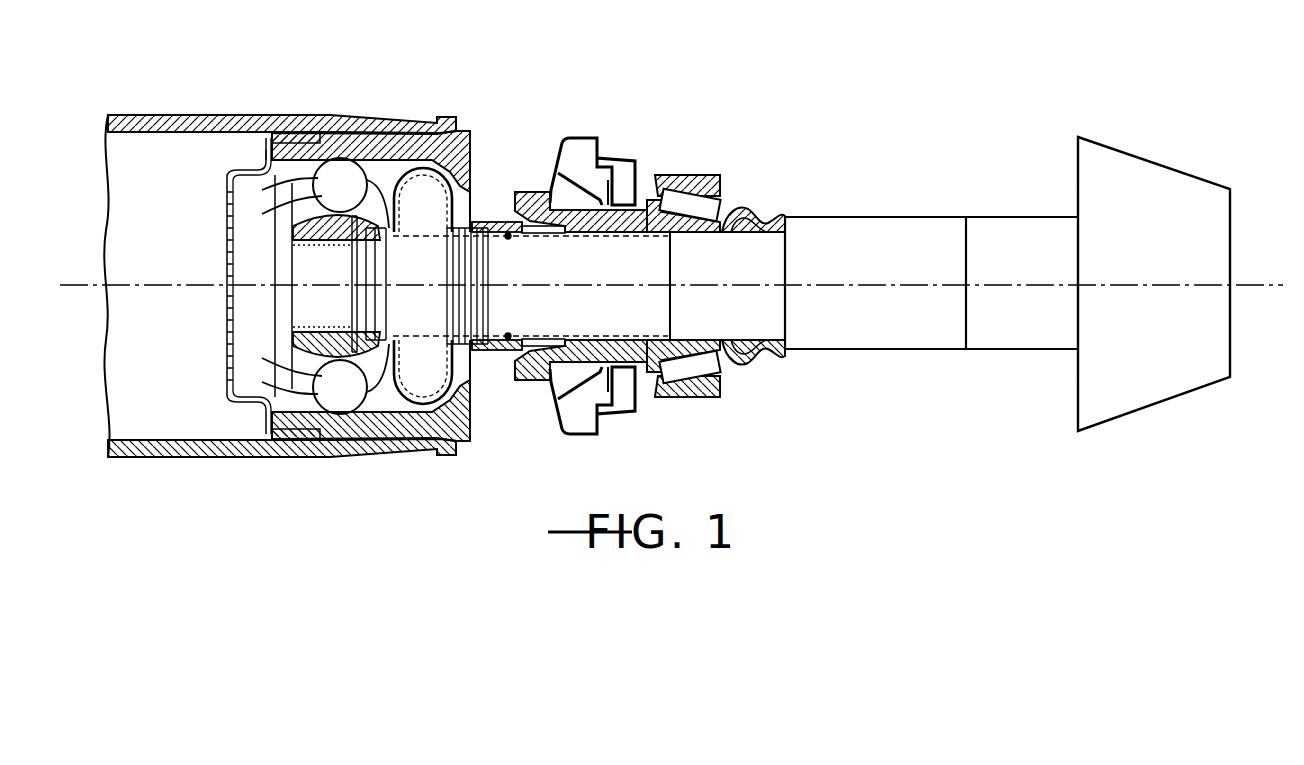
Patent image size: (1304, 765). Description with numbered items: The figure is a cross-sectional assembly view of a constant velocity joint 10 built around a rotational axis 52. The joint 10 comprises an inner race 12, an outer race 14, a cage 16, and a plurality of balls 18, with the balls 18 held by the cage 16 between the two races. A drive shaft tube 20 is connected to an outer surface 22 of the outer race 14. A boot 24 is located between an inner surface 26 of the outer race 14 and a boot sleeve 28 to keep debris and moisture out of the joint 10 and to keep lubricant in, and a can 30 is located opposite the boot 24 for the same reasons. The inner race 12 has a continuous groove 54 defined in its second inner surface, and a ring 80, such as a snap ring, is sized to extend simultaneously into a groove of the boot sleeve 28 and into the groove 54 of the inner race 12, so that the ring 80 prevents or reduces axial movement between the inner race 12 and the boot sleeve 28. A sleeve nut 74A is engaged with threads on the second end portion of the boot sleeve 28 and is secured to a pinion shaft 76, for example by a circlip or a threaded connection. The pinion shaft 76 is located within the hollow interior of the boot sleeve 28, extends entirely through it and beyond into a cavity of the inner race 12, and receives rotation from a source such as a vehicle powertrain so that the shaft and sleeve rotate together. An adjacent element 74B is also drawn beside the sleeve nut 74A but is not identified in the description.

The constant velocity joint 10 is at (412, 105).
The inner race 12 is at (308, 228).
The outer race 14 is at (470, 128).
The cage 16 is at (227, 182).
The balls 18 is at (325, 186).
The drive shaft tube 20 is at (190, 115).
The outer surface 22 is at (342, 448).
The boot 24 is at (440, 210).
The inner surface 26 is at (480, 420).
The boot sleeve 28 is at (447, 230).
The can 30 is at (227, 332).
The rotational axis 52 is at (1250, 283).
The groove 54 is at (382, 147).
The sleeve nut 74A is at (487, 347).
The bearing seal 74B is at (537, 363).
The pinion shaft 76 is at (895, 217).
The ring 80 is at (368, 338).